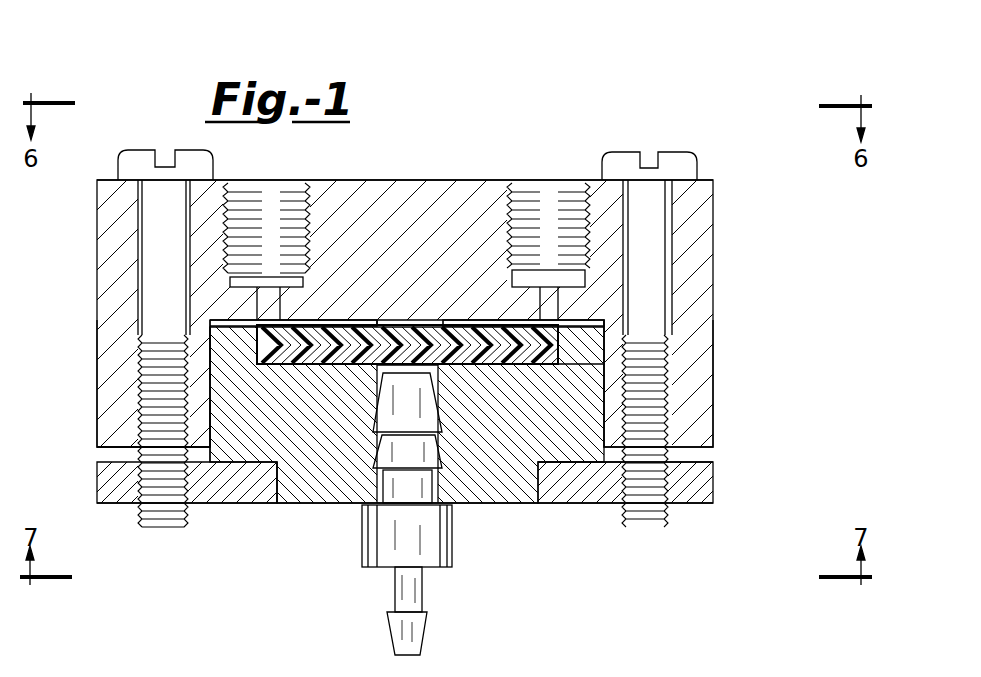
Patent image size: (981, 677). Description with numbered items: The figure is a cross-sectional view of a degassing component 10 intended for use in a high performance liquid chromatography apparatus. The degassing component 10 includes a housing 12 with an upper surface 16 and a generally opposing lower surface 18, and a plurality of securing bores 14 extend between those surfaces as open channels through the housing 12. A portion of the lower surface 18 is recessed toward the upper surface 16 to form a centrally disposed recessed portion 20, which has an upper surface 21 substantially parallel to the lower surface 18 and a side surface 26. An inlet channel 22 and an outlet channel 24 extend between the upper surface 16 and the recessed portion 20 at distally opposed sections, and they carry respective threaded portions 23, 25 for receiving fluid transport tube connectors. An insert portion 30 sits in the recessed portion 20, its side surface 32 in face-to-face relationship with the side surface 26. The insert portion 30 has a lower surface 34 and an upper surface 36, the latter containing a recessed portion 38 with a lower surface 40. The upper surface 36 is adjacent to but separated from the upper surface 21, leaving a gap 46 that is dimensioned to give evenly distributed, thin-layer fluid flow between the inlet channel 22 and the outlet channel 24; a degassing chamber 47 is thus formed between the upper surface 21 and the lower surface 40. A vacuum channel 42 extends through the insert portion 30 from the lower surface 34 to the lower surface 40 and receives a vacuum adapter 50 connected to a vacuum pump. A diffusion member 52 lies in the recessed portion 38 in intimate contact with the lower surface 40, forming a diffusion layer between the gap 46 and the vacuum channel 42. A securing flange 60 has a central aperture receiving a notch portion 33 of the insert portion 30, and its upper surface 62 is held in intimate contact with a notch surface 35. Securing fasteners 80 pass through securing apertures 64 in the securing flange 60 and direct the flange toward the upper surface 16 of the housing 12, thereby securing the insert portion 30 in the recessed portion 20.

The degassing component 10 is at (568, 165).
The housing 12 is at (716, 178).
The securing bores 14 is at (136, 236).
The upper surface 16 is at (403, 181).
The lower surface 18 is at (105, 447).
The recessed portion 20 is at (585, 335).
The upper surface 21 is at (433, 330).
The inlet channel 22 is at (272, 302).
The threaded portion 23 is at (300, 230).
The outlet channel 24 is at (541, 303).
The threaded portion 25 is at (510, 220).
The side surface 26 is at (213, 340).
The insert portion 30 is at (493, 515).
The side surface 32 is at (198, 426).
The notch portion 33 is at (275, 478).
The lower surface 34 is at (298, 507).
The notch surface 35 is at (572, 463).
The upper surface 36 is at (248, 326).
The recessed portion 38 is at (258, 330).
The lower surface 40 is at (318, 358).
The vacuum channel 42 is at (432, 362).
The gap 46 is at (377, 322).
The degassing chamber 47 is at (543, 364).
The vacuum adapter 50 is at (451, 568).
The diffusion member 52 is at (554, 360).
The securing flange 60 is at (725, 518).
The upper surface 62 is at (697, 461).
The securing apertures 64 is at (150, 478).
The securing fasteners 80 is at (132, 150).